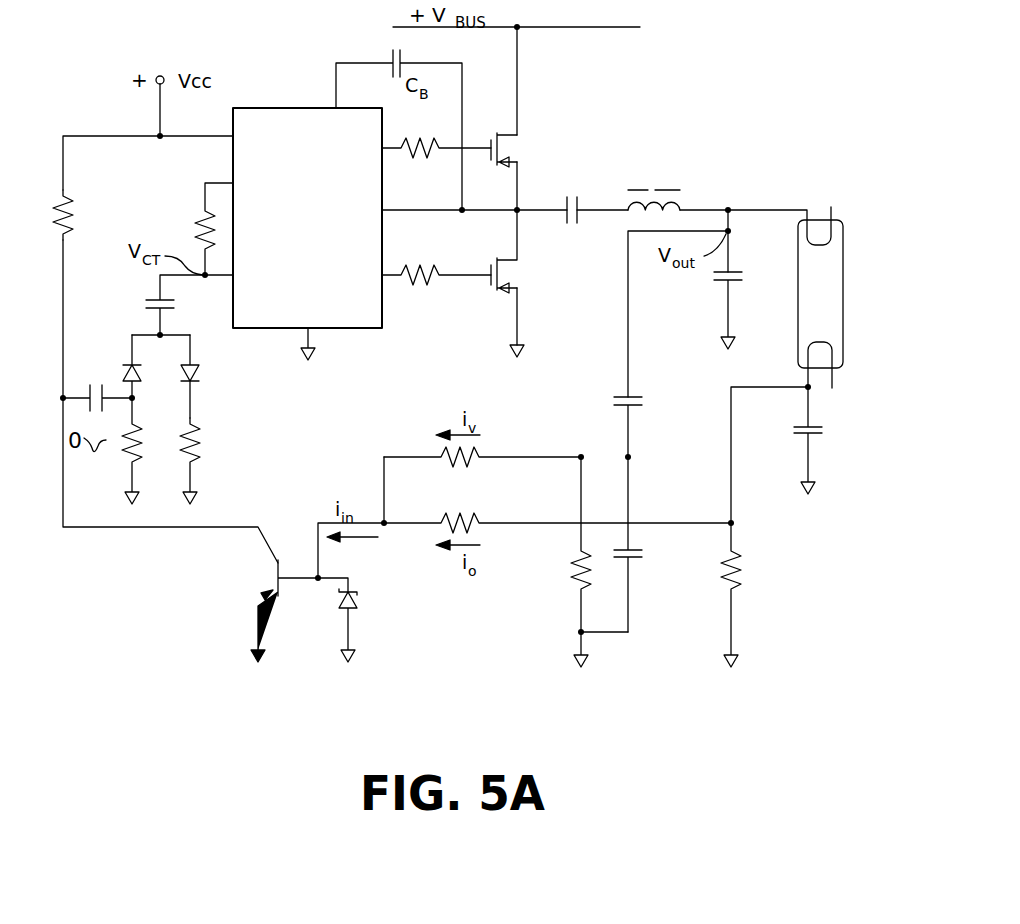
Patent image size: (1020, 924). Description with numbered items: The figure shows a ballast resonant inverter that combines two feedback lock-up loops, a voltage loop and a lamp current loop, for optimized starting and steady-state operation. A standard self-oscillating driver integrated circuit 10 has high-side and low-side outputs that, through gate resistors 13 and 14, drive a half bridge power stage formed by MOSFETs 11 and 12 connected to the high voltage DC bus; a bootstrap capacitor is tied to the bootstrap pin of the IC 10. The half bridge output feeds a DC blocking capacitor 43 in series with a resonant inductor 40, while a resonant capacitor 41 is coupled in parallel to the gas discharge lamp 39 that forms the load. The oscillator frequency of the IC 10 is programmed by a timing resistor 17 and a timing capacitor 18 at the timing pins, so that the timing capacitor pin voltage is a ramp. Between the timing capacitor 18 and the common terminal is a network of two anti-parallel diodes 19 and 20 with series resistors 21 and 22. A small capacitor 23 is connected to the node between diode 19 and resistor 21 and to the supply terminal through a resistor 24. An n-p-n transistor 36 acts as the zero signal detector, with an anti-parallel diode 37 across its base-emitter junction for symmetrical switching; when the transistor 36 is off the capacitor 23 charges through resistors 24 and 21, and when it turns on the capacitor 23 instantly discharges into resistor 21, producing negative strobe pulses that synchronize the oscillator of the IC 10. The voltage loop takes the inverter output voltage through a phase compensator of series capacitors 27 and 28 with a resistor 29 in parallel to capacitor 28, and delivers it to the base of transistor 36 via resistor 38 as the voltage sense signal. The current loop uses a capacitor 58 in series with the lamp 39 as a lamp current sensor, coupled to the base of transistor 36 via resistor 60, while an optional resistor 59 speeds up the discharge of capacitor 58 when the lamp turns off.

The self-oscillating driver integrated circuit 10 is at (311, 219).
The MOSFET 11 is at (502, 156).
The MOSFET 12 is at (502, 281).
The gate resistor 13 is at (420, 158).
The gate resistor 14 is at (420, 283).
The timing resistor 17 is at (197, 233).
The timing capacitor 18 is at (144, 305).
The diode 19 is at (124, 376).
The diode 20 is at (200, 374).
The resistor 21 is at (124, 466).
The resistor 22 is at (200, 445).
The capacitor 23 is at (88, 393).
The resistor 24 is at (74, 224).
The capacitor 27 is at (644, 400).
The capacitor 28 is at (644, 552).
The resistor 29 is at (577, 604).
The n-p-n transistor 36 is at (283, 585).
The anti-parallel diode 37 is at (361, 598).
The resistor 38 is at (444, 462).
The gas discharge lamp 39 is at (844, 278).
The resonant inductor 40 is at (655, 186).
The resonant capacitor 41 is at (738, 284).
The DC blocking capacitor 43 is at (573, 223).
The capacitor 58 is at (803, 437).
The resistor 59 is at (743, 573).
The resistor 60 is at (471, 513).